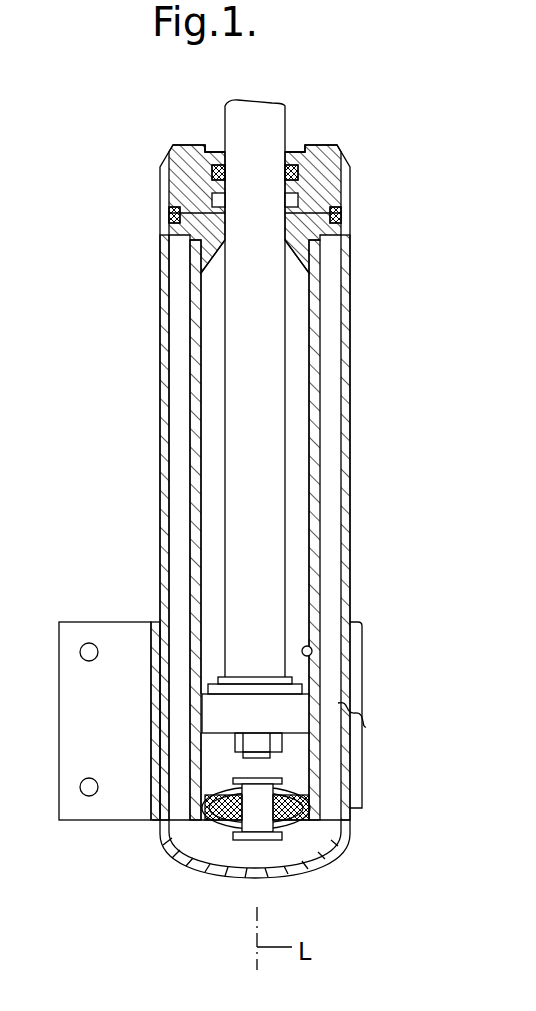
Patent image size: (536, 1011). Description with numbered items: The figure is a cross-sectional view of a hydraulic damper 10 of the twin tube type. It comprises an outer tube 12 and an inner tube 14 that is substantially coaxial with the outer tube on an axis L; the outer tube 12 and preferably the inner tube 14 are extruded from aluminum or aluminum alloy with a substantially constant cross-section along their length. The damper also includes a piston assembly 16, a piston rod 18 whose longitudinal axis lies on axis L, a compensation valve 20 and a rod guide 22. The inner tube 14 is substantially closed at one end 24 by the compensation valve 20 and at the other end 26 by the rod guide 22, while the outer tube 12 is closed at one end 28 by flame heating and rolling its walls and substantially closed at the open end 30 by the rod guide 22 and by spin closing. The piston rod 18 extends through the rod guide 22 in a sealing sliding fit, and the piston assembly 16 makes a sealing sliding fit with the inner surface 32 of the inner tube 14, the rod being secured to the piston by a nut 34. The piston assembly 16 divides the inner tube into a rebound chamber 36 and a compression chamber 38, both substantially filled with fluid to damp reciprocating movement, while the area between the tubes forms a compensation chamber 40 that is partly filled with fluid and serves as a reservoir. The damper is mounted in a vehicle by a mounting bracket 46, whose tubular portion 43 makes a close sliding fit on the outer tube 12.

The hydraulic damper 10 is at (364, 328).
The outer tube 12 is at (352, 500).
The inner tube 14 is at (318, 457).
The piston assembly 16 is at (285, 719).
The piston rod 18 is at (262, 598).
The compensation valve 20 is at (222, 815).
The rod guide 22 is at (178, 197).
The end of inner tube 24 is at (310, 820).
The other end of inner tube 26 is at (317, 253).
The end of outer tube 28 is at (302, 868).
The open end of outer tube 30 is at (308, 133).
The inner surface of inner tube 32 is at (312, 650).
The nut 34 is at (282, 752).
The rebound chamber 36 is at (212, 609).
The compression chamber 38 is at (215, 766).
The compensation chamber 40 is at (175, 517).
The tubular portion 43 is at (362, 796).
The mounting bracket 46 is at (80, 761).